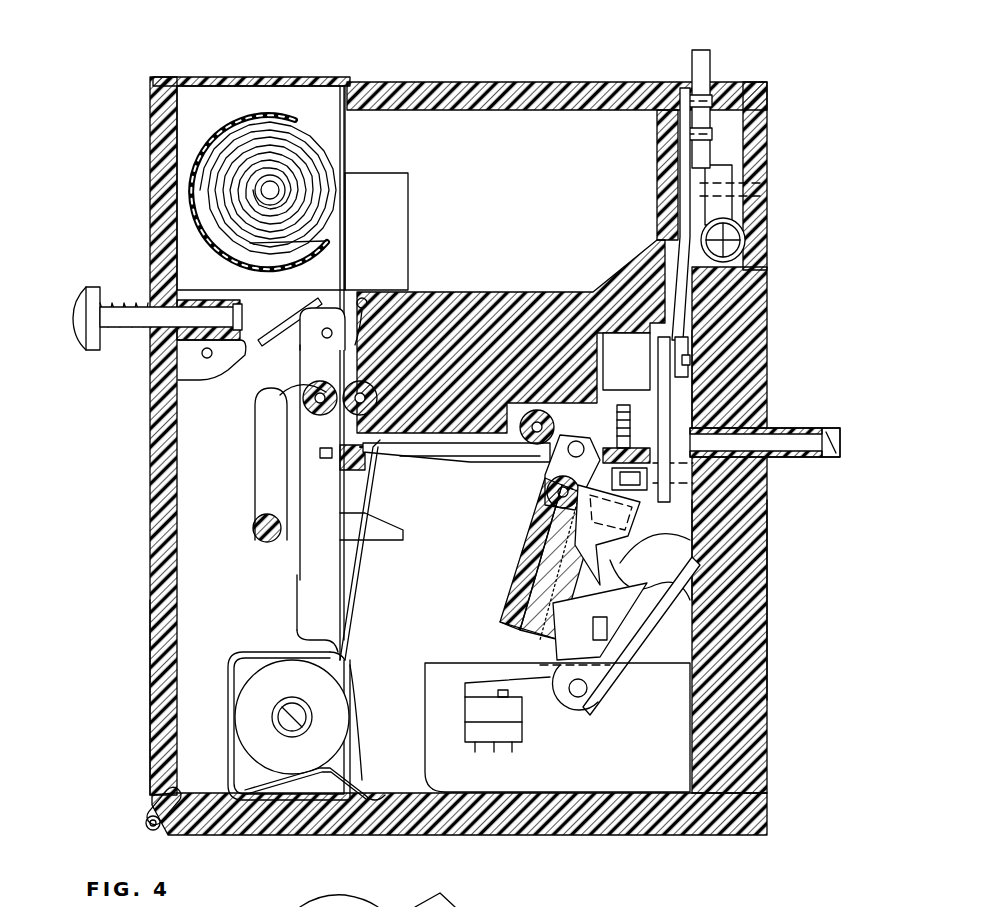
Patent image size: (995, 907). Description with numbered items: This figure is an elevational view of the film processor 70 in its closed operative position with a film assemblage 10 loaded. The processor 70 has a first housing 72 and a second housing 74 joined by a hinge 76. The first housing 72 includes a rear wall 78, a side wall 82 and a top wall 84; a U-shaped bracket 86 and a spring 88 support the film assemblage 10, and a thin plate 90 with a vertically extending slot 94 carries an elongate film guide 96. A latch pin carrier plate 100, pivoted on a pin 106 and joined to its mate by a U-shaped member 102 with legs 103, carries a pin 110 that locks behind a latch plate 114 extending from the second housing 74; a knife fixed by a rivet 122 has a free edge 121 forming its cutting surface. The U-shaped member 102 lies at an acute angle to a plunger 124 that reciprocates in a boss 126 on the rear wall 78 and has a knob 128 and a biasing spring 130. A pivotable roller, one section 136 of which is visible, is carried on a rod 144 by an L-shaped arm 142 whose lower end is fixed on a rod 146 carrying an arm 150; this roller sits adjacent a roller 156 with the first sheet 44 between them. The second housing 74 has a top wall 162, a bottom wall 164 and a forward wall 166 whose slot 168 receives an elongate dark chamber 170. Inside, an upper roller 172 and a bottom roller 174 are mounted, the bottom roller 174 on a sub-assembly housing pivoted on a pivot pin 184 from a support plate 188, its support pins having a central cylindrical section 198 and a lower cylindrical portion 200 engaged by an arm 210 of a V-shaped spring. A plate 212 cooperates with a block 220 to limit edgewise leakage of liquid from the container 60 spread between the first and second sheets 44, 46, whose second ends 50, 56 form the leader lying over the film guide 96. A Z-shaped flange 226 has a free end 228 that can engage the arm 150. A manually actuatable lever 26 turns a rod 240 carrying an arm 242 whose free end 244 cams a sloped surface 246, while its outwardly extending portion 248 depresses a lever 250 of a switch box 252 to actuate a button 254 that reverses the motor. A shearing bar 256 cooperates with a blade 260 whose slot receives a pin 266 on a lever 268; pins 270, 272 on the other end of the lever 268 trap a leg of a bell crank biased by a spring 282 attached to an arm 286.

The film assemblage 10 is at (255, 648).
The manually actuatable lever 26 is at (275, 718).
The first sheet 44 is at (346, 250).
The second sheet 46 is at (355, 582).
The second end 50 is at (548, 405).
The second end 56 is at (560, 462).
The container of processing liquid 60 is at (495, 455).
The processor 70 is at (737, 50).
The first housing 72 is at (150, 542).
The second housing 74 is at (772, 222).
The hinge 76 is at (146, 826).
The rear wall 78 is at (150, 660).
The side wall 82 is at (232, 573).
The top wall 84 is at (279, 76).
The U-shaped bracket 86 is at (228, 700).
The spring 88 is at (352, 768).
The thin plate 90 is at (322, 575).
The vertically extending slot 94 is at (335, 484).
The elongate film guide 96 is at (345, 445).
The latch pin carrier plate 100 is at (209, 358).
The U-shaped member 102 is at (290, 298).
The legs 103 is at (334, 380).
The pin 106 is at (200, 360).
The pin 110 is at (368, 308).
The latch plate 114 is at (405, 195).
The free edge 121 is at (318, 652).
The rivet 122 is at (335, 340).
The plunger 124 is at (280, 310).
The boss 126 is at (240, 290).
The knob 128 is at (73, 308).
The spring 130 is at (125, 303).
The roller section 136 is at (305, 392).
The L-shaped arm 142 is at (256, 462).
The cylindrical rod 144 is at (298, 404).
The cylindrical rod 146 is at (258, 525).
The arm 150 is at (400, 532).
The roller 156 is at (375, 390).
The top wall 162 is at (521, 82).
The bottom wall 164 is at (622, 838).
The forward wall 166 is at (768, 518).
The laterally extending slot 168 is at (775, 458).
The elongate dark chamber 170 is at (815, 428).
The upper roller 172 is at (525, 423).
The bottom roller 174 is at (548, 498).
The pivot pin 184 is at (605, 410).
The support plate 188 is at (432, 462).
The central cylindrical section 198 is at (645, 525).
The lower cylindrical portion 200 is at (685, 530).
The arm 210 is at (560, 625).
The plate 212 is at (505, 608).
The block 220 is at (522, 292).
The Z-shaped flange 226 is at (612, 635).
The free end 228 is at (530, 655).
The rod 240 is at (595, 706).
The arm 242 is at (765, 562).
The free end 244 is at (760, 535).
The sloped surface 246 is at (543, 540).
The outwardly extending portion 248 is at (592, 690).
The lever 250 is at (505, 683).
The switch box 252 is at (512, 742).
The button 254 is at (525, 715).
The shearing bar 256 is at (680, 430).
The blade 260 is at (730, 412).
The pin 266 is at (700, 362).
The lever 268 is at (683, 185).
The pin 270 is at (712, 100).
The pin 272 is at (745, 135).
The spring 282 is at (745, 262).
The arm 286 is at (765, 190).